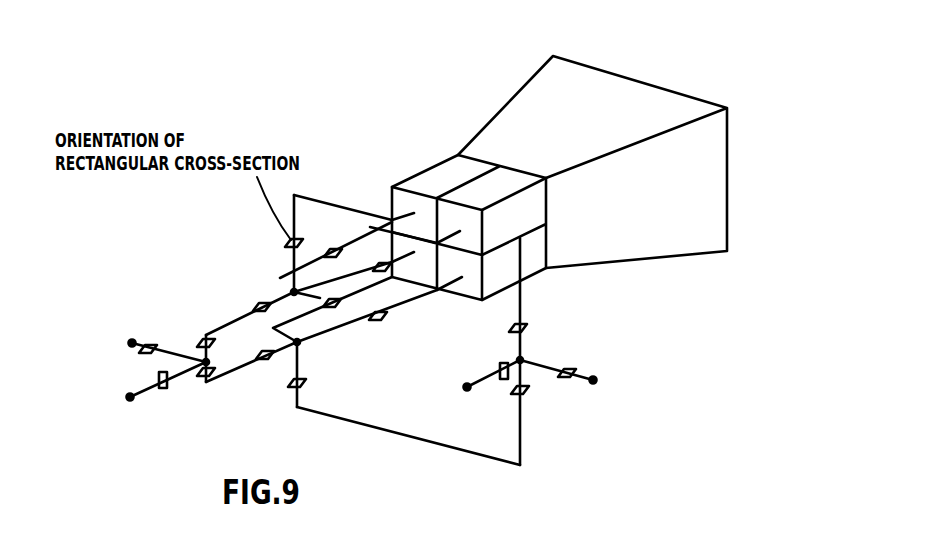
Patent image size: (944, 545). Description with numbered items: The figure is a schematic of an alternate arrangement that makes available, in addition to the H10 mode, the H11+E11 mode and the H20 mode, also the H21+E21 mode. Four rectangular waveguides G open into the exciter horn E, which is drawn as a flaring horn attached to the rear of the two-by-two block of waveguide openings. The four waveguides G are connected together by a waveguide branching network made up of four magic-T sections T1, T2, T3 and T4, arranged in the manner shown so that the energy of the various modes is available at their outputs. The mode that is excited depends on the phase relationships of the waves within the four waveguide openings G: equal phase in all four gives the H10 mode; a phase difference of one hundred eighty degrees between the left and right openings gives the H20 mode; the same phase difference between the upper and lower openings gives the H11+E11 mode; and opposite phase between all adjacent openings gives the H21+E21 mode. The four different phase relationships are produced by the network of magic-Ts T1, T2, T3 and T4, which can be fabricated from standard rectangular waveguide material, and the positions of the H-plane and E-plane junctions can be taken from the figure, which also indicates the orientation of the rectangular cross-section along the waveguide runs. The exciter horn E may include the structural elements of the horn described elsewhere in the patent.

The exciter horn E is at (530, 112).
The rectangular waveguides G is at (470, 193).
The magic-T section T1 is at (282, 245).
The magic-T section T2 is at (307, 373).
The magic-T section T3 is at (201, 346).
The magic-T section T4 is at (528, 351).
The H10 mode H10 is at (154, 398).
The H11+E11 mode H11 is at (125, 339).
The H20 mode H20 is at (483, 393).
The H21+E21 mode H21 is at (596, 392).